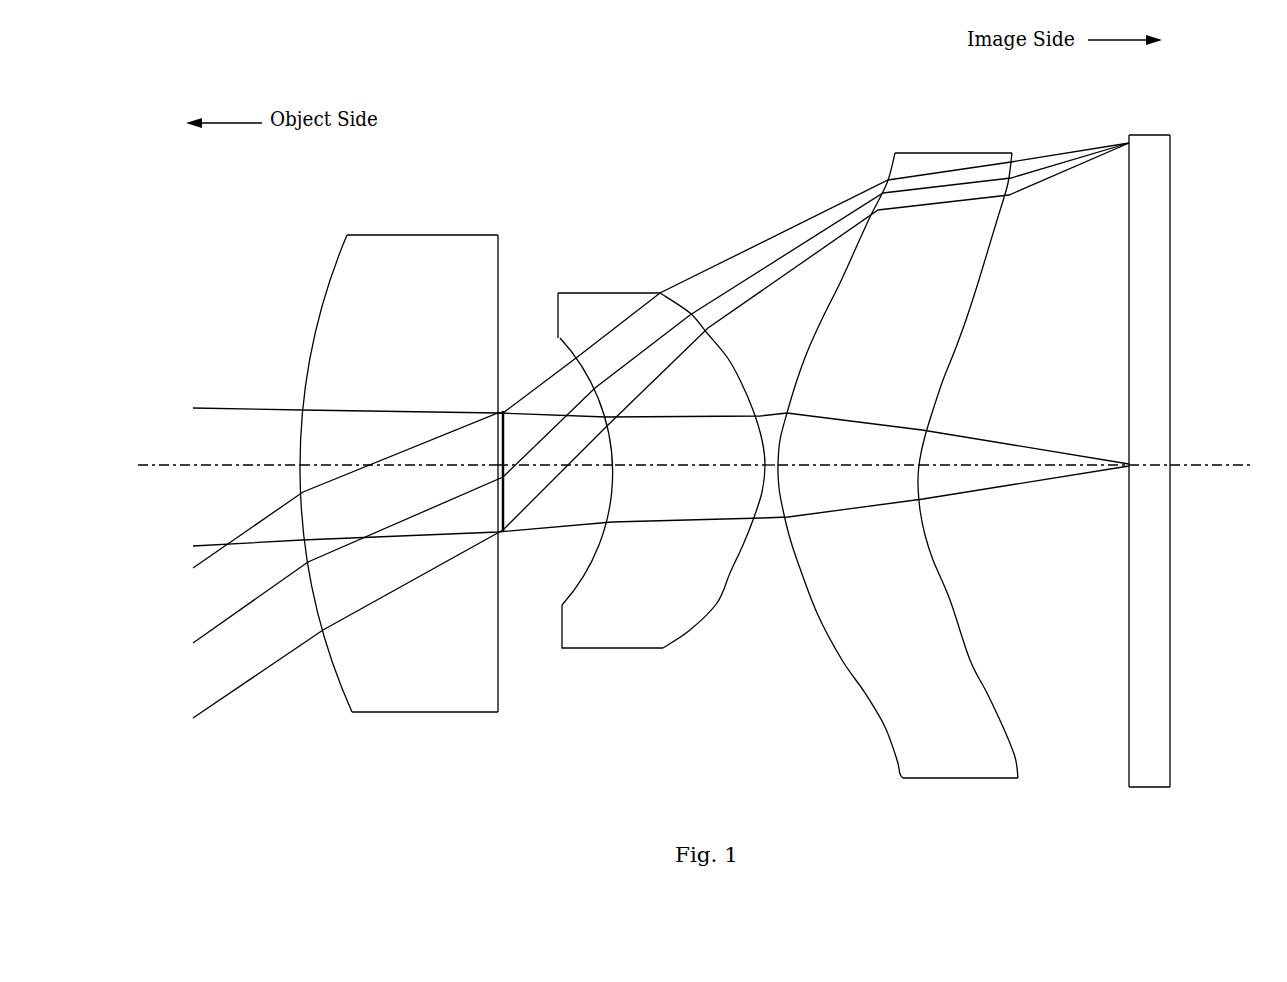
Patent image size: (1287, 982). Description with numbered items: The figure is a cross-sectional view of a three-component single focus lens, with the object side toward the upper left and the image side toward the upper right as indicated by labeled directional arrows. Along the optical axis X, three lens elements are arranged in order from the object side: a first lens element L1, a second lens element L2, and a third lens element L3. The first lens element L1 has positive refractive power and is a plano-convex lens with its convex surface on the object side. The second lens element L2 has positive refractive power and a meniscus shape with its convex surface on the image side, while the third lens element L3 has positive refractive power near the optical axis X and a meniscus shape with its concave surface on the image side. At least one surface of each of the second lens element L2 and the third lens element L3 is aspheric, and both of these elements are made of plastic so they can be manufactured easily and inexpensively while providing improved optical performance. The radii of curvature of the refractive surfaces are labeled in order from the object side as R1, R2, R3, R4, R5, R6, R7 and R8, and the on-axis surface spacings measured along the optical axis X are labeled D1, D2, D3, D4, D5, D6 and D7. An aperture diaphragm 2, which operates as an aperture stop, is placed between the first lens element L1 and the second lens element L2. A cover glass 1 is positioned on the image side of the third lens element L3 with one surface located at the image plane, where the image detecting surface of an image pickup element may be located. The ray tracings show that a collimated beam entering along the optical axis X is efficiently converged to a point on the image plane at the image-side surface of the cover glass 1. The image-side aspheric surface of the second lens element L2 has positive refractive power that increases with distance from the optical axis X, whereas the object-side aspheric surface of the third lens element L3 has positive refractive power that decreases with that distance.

The cover glass 1 is at (1144, 496).
The aperture diaphragm 2 is at (506, 515).
The optical axis X is at (694, 538).
The first lens element L1 is at (400, 435).
The second lens element L2 is at (639, 426).
The third lens element L3 is at (893, 436).
The radius of curvature of first surface R1 is at (318, 324).
The radius of curvature of second surface R2 is at (498, 276).
The radius of curvature of third surface R3 is at (582, 378).
The radius of curvature of fourth surface R4 is at (683, 297).
The radius of curvature of fifth surface R5 is at (797, 363).
The radius of curvature of sixth surface R6 is at (930, 377).
The radius of curvature of seventh surface R7 is at (1128, 265).
The radius of curvature of eighth surface R8 is at (1170, 265).
The first on-axis surface spacing D1 is at (397, 468).
The second on-axis surface spacing D2 is at (587, 467).
The third on-axis surface spacing D3 is at (675, 467).
The fourth on-axis surface spacing D4 is at (770, 467).
The fifth on-axis surface spacing D5 is at (845, 467).
The sixth on-axis surface spacing D6 is at (1002, 467).
The seventh on-axis surface spacing D7 is at (1149, 495).